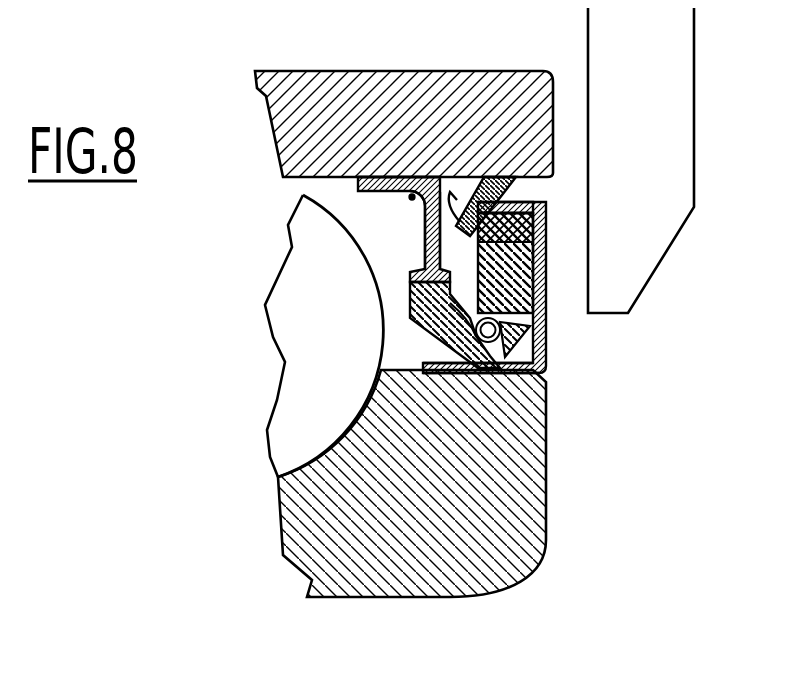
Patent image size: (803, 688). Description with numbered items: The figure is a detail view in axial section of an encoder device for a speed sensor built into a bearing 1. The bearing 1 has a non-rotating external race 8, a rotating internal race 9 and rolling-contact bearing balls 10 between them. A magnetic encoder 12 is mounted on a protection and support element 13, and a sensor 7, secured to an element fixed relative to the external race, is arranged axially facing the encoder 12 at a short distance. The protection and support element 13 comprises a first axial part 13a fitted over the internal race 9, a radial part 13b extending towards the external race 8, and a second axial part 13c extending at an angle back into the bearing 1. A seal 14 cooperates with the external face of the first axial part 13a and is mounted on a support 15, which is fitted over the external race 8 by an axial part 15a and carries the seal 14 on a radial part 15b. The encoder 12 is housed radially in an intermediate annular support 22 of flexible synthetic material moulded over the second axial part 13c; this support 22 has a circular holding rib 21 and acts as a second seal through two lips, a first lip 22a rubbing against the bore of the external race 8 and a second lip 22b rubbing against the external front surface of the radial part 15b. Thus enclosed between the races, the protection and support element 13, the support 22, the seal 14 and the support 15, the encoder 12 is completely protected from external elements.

The bearing 1 is at (233, 388).
The sensor 7 is at (667, 115).
The external race 8 is at (288, 105).
The internal race 9 is at (490, 483).
The rolling-contact bearing balls 10 is at (303, 408).
The magnetic encoder 12 is at (545, 263).
The protection and support element 13 is at (548, 347).
The first axial part 13a is at (545, 410).
The radial part 13b is at (537, 318).
The second axial part 13c is at (545, 217).
The seal 14 is at (442, 342).
The support 15 is at (367, 175).
The axial part 15a is at (403, 187).
The radial part 15b is at (405, 200).
The circular holding rib 21 is at (420, 222).
The intermediate annular support 22 is at (482, 180).
The first lip 22a is at (512, 187).
The second lip 22b is at (448, 197).